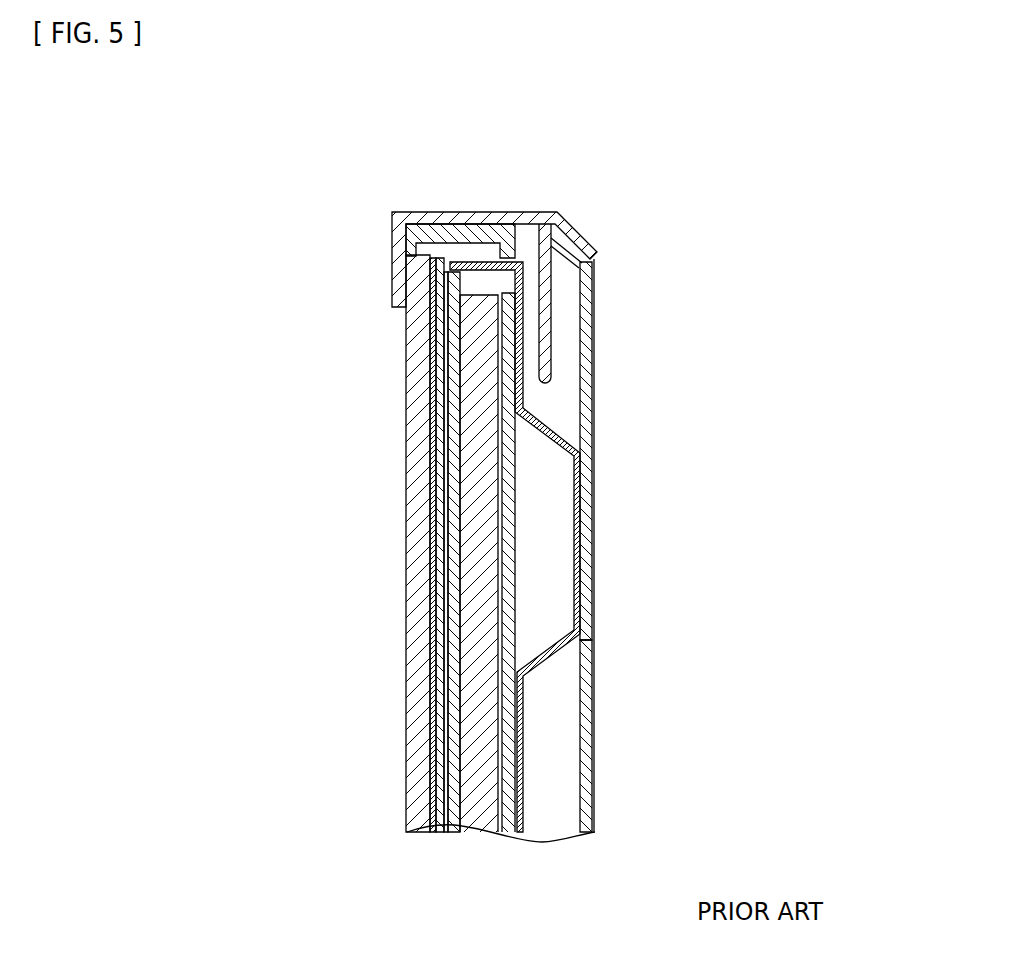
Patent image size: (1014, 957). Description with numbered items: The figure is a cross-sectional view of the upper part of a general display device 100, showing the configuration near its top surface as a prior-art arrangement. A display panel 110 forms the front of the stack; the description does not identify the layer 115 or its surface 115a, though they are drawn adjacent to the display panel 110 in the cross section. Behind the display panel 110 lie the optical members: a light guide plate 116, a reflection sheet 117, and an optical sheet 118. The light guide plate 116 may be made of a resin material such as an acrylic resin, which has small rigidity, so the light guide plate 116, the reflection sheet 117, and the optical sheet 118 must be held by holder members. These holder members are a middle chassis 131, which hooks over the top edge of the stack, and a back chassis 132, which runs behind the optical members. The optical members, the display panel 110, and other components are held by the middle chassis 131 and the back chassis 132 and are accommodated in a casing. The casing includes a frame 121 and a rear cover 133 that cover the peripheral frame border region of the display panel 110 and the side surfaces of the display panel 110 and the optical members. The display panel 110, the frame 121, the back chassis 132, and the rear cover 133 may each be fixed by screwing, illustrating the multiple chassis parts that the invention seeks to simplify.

The display device 100 is at (622, 156).
The display panel 110 is at (410, 412).
The display panel 115 is at (432, 497).
The front surface of display panel 115a is at (430, 457).
The light guide plate 116 is at (478, 576).
The reflection sheet 117 is at (490, 633).
The optical sheet 118 is at (452, 533).
The frame 121 is at (543, 221).
The middle chassis 131 is at (443, 221).
The back chassis 132 is at (592, 542).
The rear cover 133 is at (590, 687).